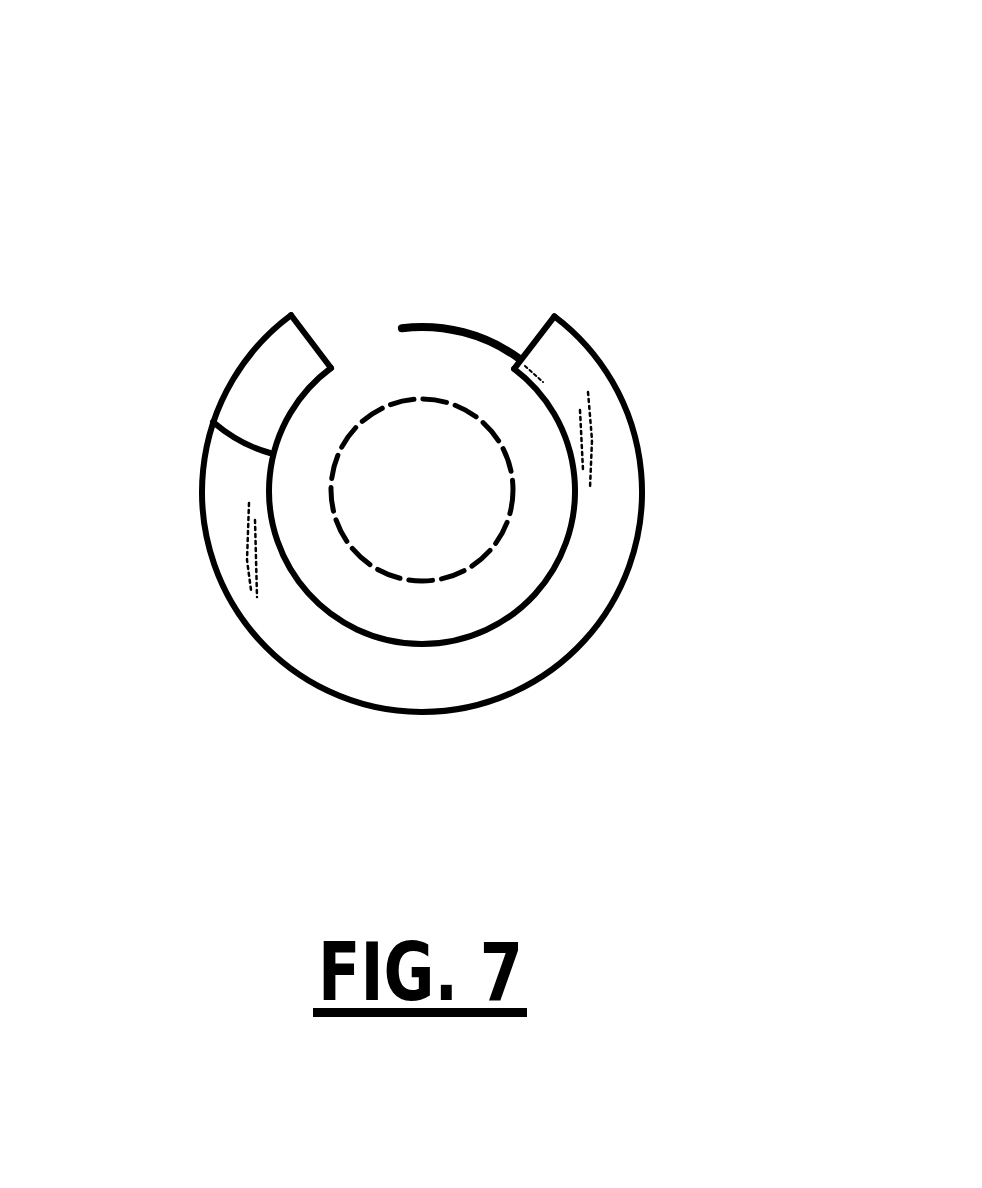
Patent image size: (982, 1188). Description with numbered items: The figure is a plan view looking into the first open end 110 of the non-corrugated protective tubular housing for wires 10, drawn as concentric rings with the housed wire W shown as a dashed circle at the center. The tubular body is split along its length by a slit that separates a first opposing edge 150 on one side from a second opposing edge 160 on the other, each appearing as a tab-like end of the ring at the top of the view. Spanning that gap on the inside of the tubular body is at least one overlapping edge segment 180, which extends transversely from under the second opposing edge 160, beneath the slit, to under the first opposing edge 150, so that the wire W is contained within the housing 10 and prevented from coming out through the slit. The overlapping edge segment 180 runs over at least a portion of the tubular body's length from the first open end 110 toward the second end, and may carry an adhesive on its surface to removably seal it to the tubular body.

The non-corrugated protective tubular housing for wires 10 is at (682, 460).
The first open end 110 is at (213, 422).
The first opposing edge 150 is at (313, 338).
The second opposing edge 160 is at (538, 338).
The overlapping edge segment 180 is at (447, 328).